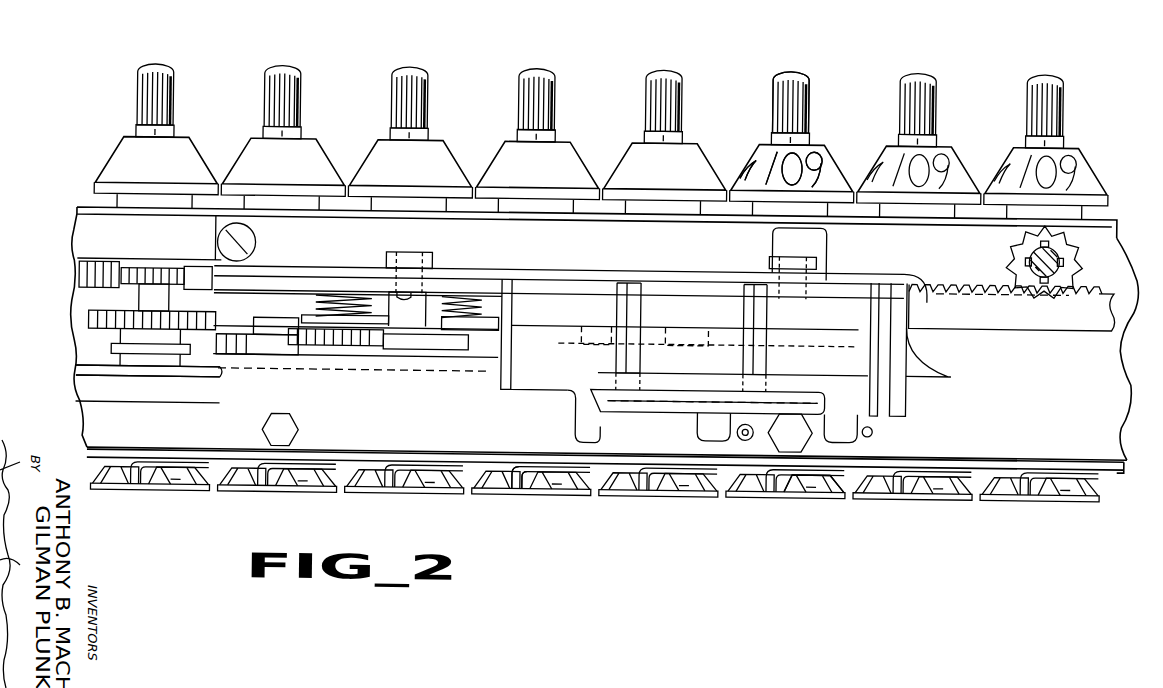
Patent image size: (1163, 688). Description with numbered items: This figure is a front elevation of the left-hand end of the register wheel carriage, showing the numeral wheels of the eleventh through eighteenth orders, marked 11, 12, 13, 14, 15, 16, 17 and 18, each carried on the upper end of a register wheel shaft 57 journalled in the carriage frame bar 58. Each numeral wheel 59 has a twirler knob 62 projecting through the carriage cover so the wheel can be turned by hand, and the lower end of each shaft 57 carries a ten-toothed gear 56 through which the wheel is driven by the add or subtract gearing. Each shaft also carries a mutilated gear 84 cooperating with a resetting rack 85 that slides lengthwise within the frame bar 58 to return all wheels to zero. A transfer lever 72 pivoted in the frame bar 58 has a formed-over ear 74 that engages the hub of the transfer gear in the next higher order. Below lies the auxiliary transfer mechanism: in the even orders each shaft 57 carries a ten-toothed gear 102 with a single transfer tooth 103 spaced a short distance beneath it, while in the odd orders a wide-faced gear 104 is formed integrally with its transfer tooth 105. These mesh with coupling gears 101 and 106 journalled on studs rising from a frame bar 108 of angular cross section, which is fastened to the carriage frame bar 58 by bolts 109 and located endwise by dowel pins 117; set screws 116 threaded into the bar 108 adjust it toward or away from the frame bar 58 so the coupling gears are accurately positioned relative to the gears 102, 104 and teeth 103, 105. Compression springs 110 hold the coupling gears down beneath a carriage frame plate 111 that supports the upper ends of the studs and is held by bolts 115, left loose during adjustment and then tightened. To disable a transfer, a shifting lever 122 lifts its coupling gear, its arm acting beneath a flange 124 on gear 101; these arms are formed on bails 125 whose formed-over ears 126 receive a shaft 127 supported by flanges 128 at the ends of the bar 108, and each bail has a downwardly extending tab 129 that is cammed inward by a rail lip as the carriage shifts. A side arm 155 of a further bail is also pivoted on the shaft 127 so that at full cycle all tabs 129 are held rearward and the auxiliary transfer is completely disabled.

The knob 11 is at (1047, 135).
The knob 12 is at (920, 134).
The knob 13 is at (792, 132).
The knob 14 is at (665, 131).
The knob 15 is at (538, 129).
The knob 16 is at (411, 127).
The knob 17 is at (284, 126).
The knob 18 is at (157, 124).
The ten-toothed gear 56 is at (792, 478).
The register wheel shaft 57 is at (150, 303).
The carriage frame bar 58 is at (70, 247).
The numeral wheel 59 is at (806, 166).
The twirler knob 62 is at (795, 97).
The transfer lever 72 is at (597, 456).
The formed-over ear 74 is at (518, 475).
The mutilated gear 84 is at (170, 275).
The resetting rack 85 is at (118, 270).
The coupling gear 101 is at (347, 340).
The ten-toothed gear 102 is at (392, 336).
The transfer tooth 103 is at (405, 324).
The wide-faced gear 104 is at (232, 372).
The transfer tooth 105 is at (258, 328).
The coupling gear 106 is at (477, 322).
The frame bar 108 is at (468, 437).
The bolt 109 is at (283, 427).
The compression spring 110 is at (356, 286).
The carriage frame plate 111 is at (542, 282).
The bolt 115 is at (413, 254).
The set screw 116 is at (747, 432).
The dowel pin 117 is at (875, 423).
The shifting lever 122 is at (543, 386).
The flange 124 is at (302, 294).
The bail 125 is at (550, 376).
The formed-over ear 126 is at (750, 354).
The shaft 127 is at (727, 302).
The flange 128 is at (902, 393).
The tab 129 is at (593, 424).
The side arm 155 is at (887, 310).